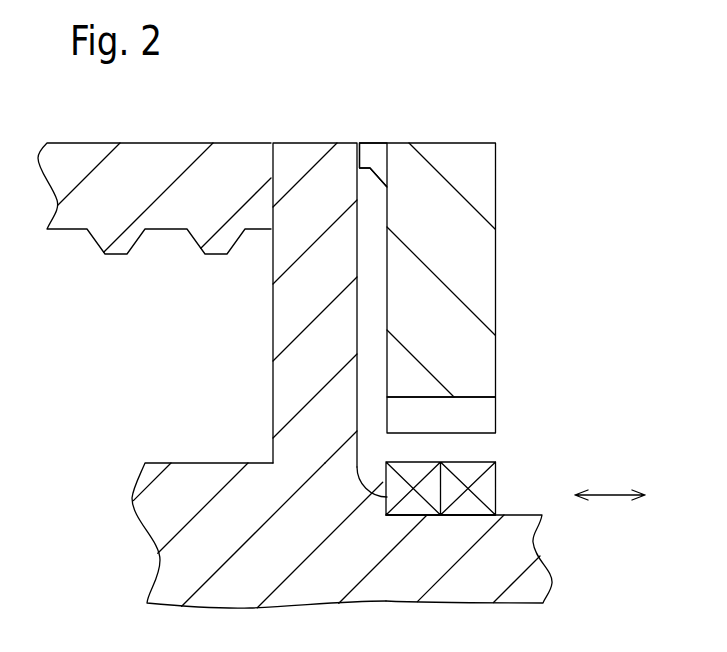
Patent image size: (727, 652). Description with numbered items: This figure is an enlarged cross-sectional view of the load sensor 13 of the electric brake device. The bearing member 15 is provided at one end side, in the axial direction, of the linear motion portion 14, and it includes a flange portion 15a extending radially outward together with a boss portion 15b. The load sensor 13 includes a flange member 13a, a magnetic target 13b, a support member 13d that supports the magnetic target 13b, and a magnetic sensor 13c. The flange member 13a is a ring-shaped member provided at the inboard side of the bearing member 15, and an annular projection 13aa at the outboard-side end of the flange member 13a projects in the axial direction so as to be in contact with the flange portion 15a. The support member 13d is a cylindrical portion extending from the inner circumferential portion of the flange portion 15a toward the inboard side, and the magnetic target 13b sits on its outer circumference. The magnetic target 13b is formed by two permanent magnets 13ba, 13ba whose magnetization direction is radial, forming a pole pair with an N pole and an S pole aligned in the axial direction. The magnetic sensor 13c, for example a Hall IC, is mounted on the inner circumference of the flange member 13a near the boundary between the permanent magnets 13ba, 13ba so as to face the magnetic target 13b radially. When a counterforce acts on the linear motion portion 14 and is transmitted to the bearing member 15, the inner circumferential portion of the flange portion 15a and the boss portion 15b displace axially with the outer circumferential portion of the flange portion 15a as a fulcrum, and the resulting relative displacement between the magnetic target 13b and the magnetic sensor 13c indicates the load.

The load sensor 13 is at (582, 242).
The flange member 13a is at (487, 252).
The annular projection 13aa is at (377, 155).
The magnetic target 13b is at (495, 465).
The permanent magnet 13ba is at (403, 517).
The magnetic sensor 13c is at (497, 398).
The support member 13d is at (499, 532).
The linear motion portion 14 is at (128, 238).
The bearing member 15 is at (148, 315).
The flange portion 15a is at (282, 319).
The boss portion 15b is at (162, 472).